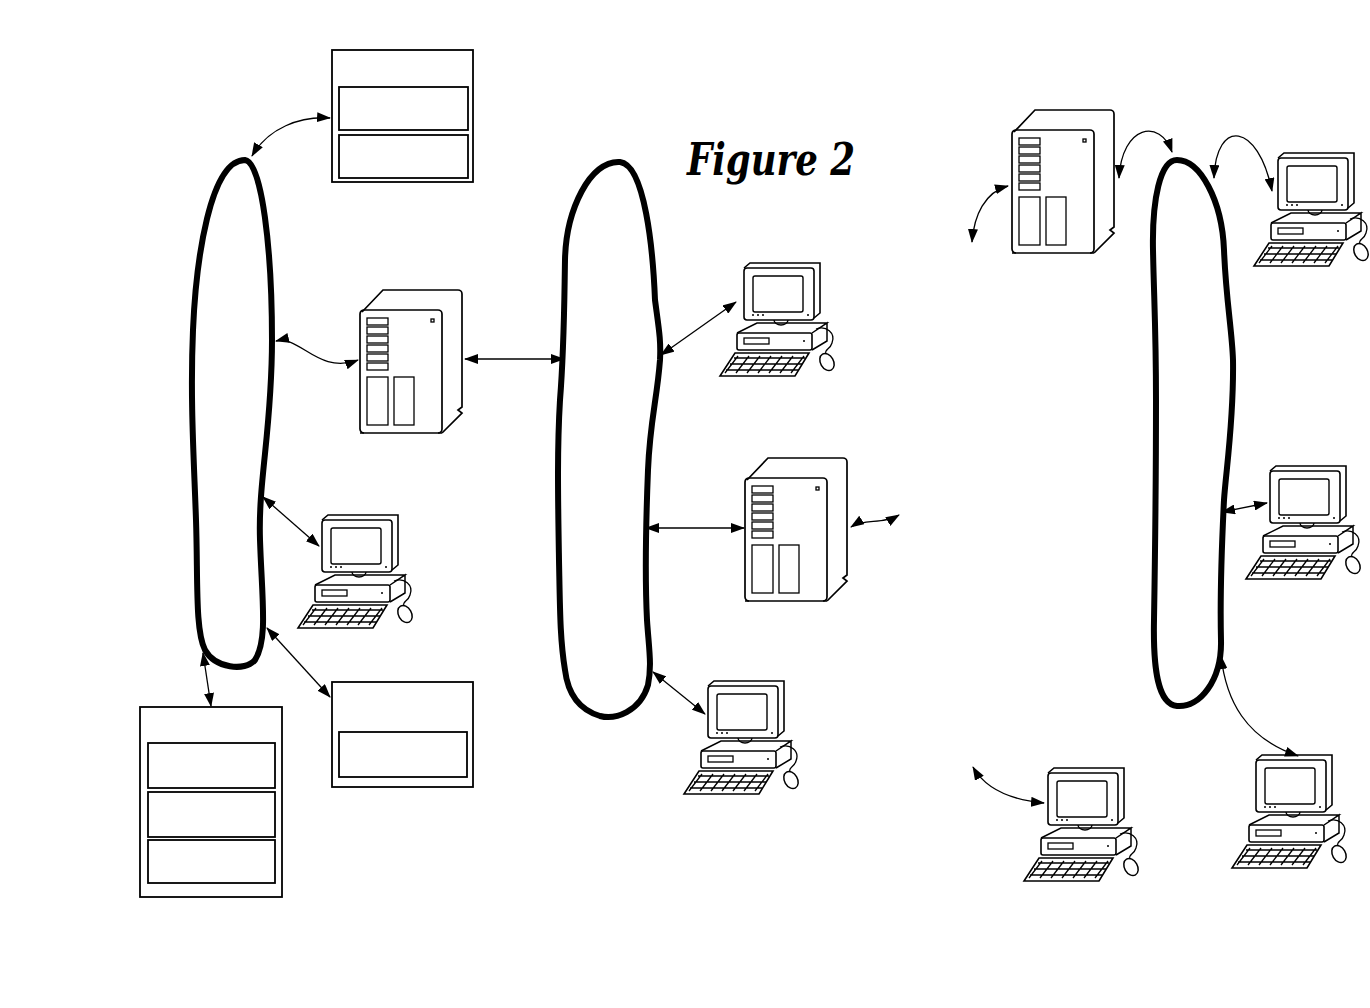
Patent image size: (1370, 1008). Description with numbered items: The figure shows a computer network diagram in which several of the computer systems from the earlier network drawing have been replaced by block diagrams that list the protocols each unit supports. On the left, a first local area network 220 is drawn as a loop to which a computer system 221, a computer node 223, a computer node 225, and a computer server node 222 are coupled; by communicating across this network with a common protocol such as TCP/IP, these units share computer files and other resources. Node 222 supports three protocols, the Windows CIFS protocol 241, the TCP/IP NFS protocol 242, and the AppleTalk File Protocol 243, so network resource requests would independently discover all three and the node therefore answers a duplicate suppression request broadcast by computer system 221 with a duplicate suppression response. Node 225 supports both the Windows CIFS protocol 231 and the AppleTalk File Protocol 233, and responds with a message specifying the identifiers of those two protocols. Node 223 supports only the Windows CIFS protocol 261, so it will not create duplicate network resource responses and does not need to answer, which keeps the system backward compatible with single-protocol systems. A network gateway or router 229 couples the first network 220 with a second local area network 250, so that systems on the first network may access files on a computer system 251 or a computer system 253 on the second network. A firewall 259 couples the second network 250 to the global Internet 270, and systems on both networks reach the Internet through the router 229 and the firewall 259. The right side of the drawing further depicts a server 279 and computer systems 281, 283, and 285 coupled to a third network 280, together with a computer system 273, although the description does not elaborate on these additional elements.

The local area network 220 is at (272, 481).
The computer system 221 is at (339, 562).
The computer server node 222 is at (211, 775).
The computer node 223 is at (370, 707).
The computer node 225 is at (362, 116).
The server 229 is at (420, 361).
The Windows CIFS protocol 231 is at (403, 108).
The AppleTalk File Protocol 233 is at (403, 156).
The Windows CIFS protocol 241 is at (211, 765).
The NFS protocol 242 is at (211, 814).
The AppleTalk File Protocol 243 is at (211, 861).
The second local area network 250 is at (540, 480).
The client computer 251 is at (727, 733).
The client computer 253 is at (749, 319).
The server 259 is at (746, 529).
The Windows CIFS protocol 261 is at (403, 754).
The Internet 270 is at (933, 517).
The client computer 273 is at (1057, 824).
The server 279 is at (1072, 181).
The third local area network 280 is at (1240, 360).
The client computer 281 is at (1292, 201).
The client computer 283 is at (1292, 522).
The client computer 285 is at (1285, 762).